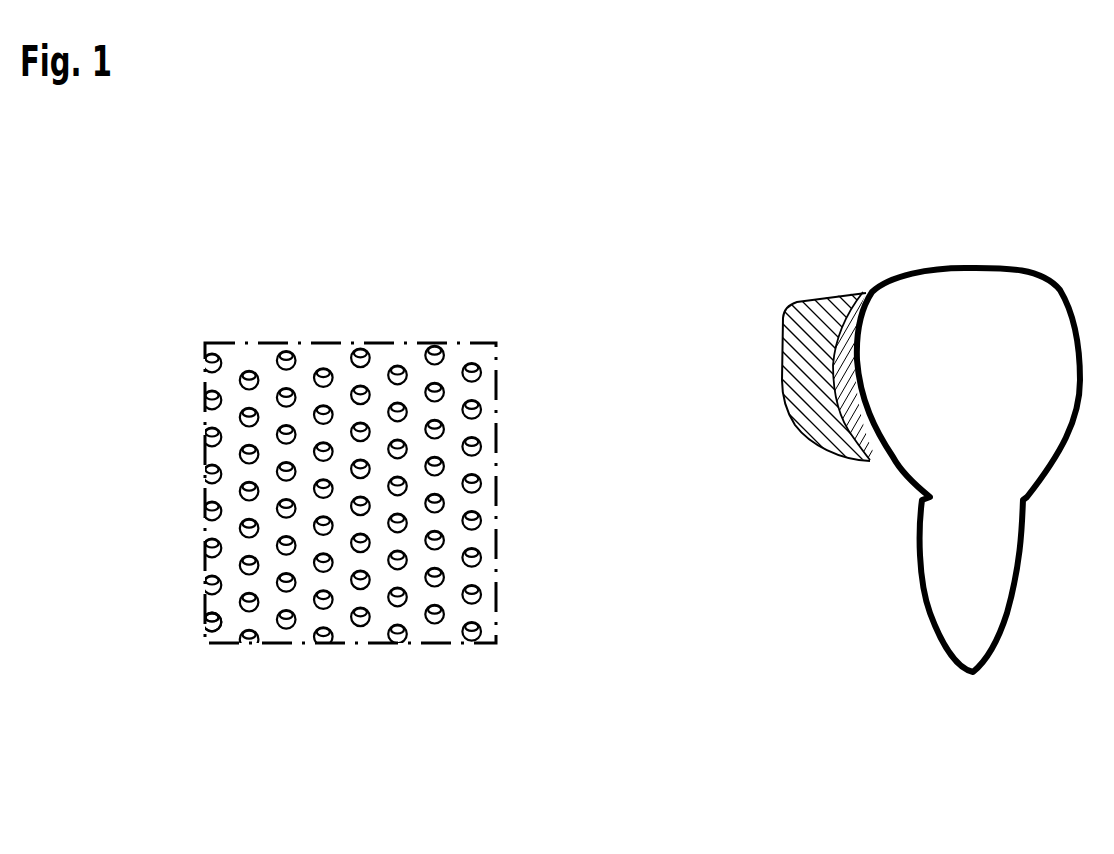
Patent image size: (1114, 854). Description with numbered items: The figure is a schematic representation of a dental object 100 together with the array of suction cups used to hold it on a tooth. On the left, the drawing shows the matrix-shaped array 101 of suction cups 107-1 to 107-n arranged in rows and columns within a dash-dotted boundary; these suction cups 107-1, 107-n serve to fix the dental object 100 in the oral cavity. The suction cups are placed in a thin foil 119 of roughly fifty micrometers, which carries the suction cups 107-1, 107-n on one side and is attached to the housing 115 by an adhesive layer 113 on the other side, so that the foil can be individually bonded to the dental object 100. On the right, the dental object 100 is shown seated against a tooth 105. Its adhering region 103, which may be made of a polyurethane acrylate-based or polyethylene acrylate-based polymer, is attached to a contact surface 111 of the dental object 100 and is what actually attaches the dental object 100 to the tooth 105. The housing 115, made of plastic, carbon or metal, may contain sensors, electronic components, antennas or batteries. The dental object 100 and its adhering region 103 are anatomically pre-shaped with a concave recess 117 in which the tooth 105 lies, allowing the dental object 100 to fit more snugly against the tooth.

The dental object 100 is at (849, 254).
The matrix-shaped array 101 is at (331, 302).
The adhering region 103 is at (205, 523).
The tooth 105 is at (1003, 295).
The suction cup 107-1 is at (210, 632).
The suction cup 107-n is at (483, 632).
The contact surface 111 is at (837, 380).
The adhesive layer 113 is at (837, 400).
The housing 115 is at (807, 320).
The concave recess 117 is at (837, 367).
The thin foil 119 is at (458, 353).